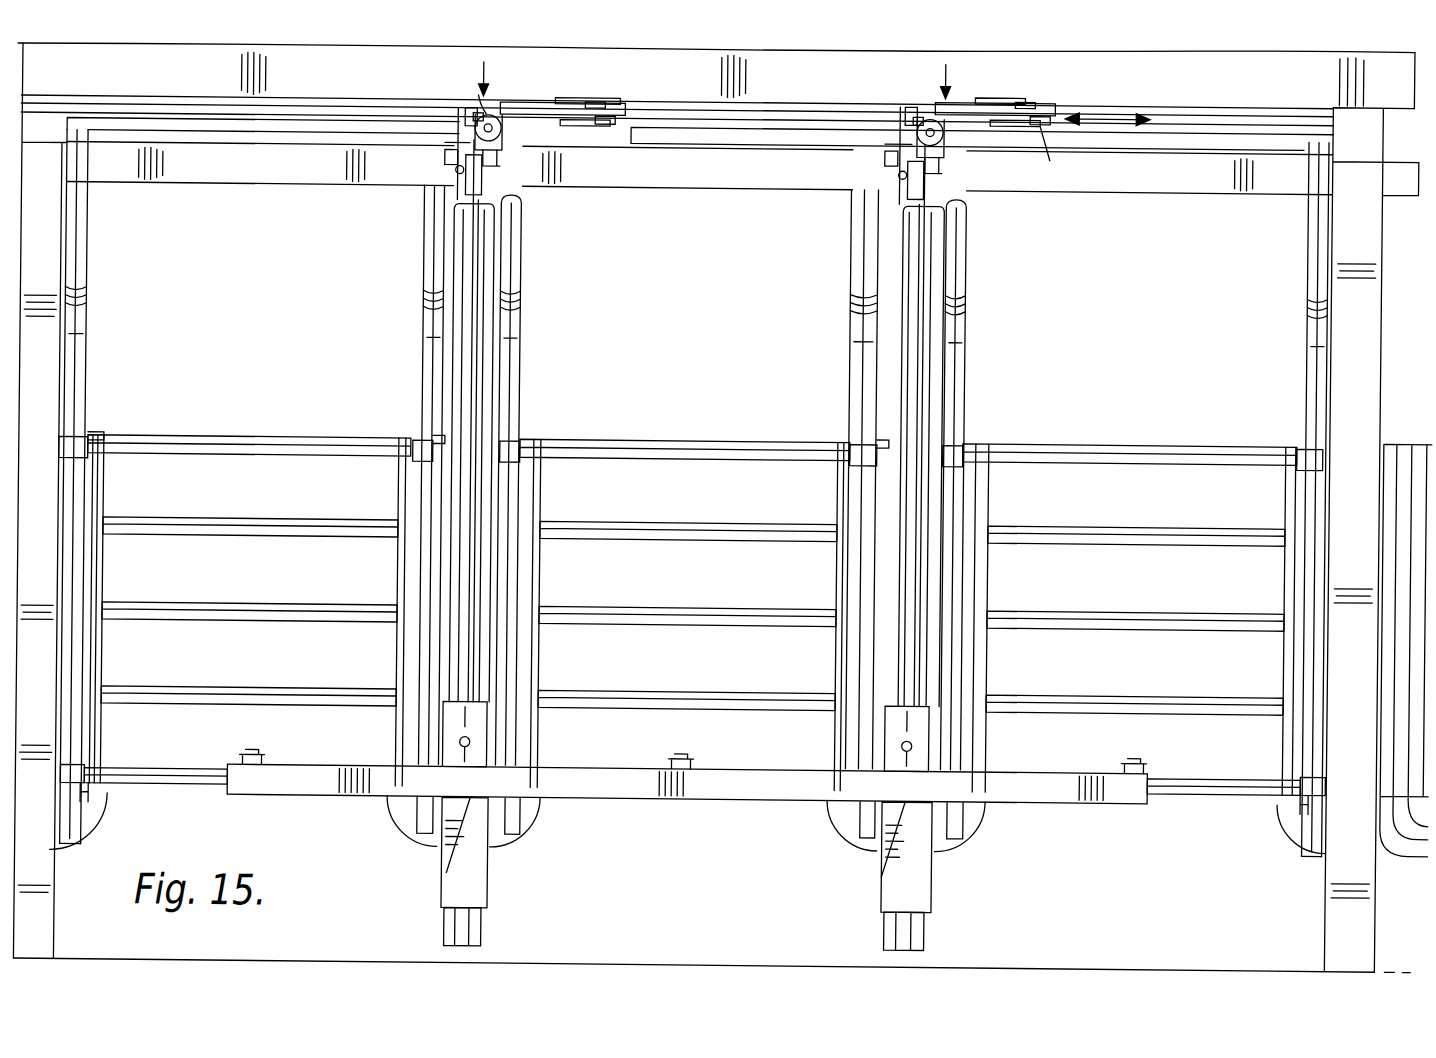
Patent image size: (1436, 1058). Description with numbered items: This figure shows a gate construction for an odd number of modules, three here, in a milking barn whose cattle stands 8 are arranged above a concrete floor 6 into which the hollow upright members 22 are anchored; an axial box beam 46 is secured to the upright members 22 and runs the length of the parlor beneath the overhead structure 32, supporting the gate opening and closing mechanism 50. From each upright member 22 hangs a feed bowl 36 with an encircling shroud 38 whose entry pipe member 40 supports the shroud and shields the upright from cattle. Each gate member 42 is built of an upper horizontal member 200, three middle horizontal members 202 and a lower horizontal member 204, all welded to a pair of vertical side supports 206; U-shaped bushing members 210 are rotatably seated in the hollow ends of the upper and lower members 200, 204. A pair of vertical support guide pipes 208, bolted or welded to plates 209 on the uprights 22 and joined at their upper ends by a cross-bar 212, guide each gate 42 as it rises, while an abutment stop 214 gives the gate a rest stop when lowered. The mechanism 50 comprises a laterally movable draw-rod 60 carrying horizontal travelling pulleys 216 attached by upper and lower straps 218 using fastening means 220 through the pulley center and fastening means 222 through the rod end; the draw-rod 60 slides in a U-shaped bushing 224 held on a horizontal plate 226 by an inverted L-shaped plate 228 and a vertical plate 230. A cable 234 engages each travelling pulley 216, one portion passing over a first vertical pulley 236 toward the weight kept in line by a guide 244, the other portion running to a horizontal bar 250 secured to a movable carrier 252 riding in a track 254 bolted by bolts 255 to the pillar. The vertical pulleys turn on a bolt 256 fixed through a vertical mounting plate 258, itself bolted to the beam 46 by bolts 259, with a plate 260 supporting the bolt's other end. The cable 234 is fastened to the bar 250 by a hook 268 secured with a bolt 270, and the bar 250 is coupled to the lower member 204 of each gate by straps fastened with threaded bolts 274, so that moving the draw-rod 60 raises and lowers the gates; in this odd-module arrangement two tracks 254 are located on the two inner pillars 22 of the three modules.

The concrete floor 6 is at (301, 958).
The cattle stands 8 is at (238, 316).
The hollow upright members 22 is at (66, 381).
The overhead beam 32 is at (1242, 74).
The feed bowl 36 is at (435, 838).
The encircling shroud 38 is at (758, 618).
The entry pipe member 40 is at (425, 304).
The gate member 42 is at (212, 434).
The axial box beam 46 is at (290, 176).
The gate opening and closing mechanism 50 is at (485, 67).
The draw-rod 60 is at (105, 101).
The upper horizontal member 200 is at (301, 453).
The middle horizontal member 202 is at (277, 518).
The lower horizontal member 204 is at (198, 783).
The vertical side supports 206 is at (110, 566).
The vertical support guide pipes 208 is at (88, 203).
The plates 209 is at (89, 335).
The U-shaped bushing member 210 is at (94, 441).
The cross-bar 212 is at (322, 124).
The abutment stop 214 is at (96, 805).
The horizontal travelling pulley 216 is at (571, 98).
The upper and lower straps 218 is at (612, 114).
The fastening means 220 is at (561, 92).
The fastening means 222 is at (607, 110).
The U-shaped bushing 224 is at (481, 91).
The horizontal plate 226 is at (459, 192).
The inverted L-shaped plate 228 is at (467, 111).
The vertical plate 230 is at (446, 155).
The cable 234 is at (541, 119).
The first vertical pulley 236 is at (485, 108).
The guide 244 is at (486, 190).
The horizontal bar 250 is at (759, 793).
The movable carrier 252 is at (497, 867).
The track 254 is at (455, 923).
The bolts 255 is at (493, 326).
The bolt 256 is at (503, 131).
The vertical mounting plate 258 is at (457, 168).
The bolts 259 is at (499, 162).
The plate 260 is at (503, 147).
The hook 268 is at (484, 744).
The bolt 270 is at (455, 866).
The threaded bolt 274 is at (260, 747).